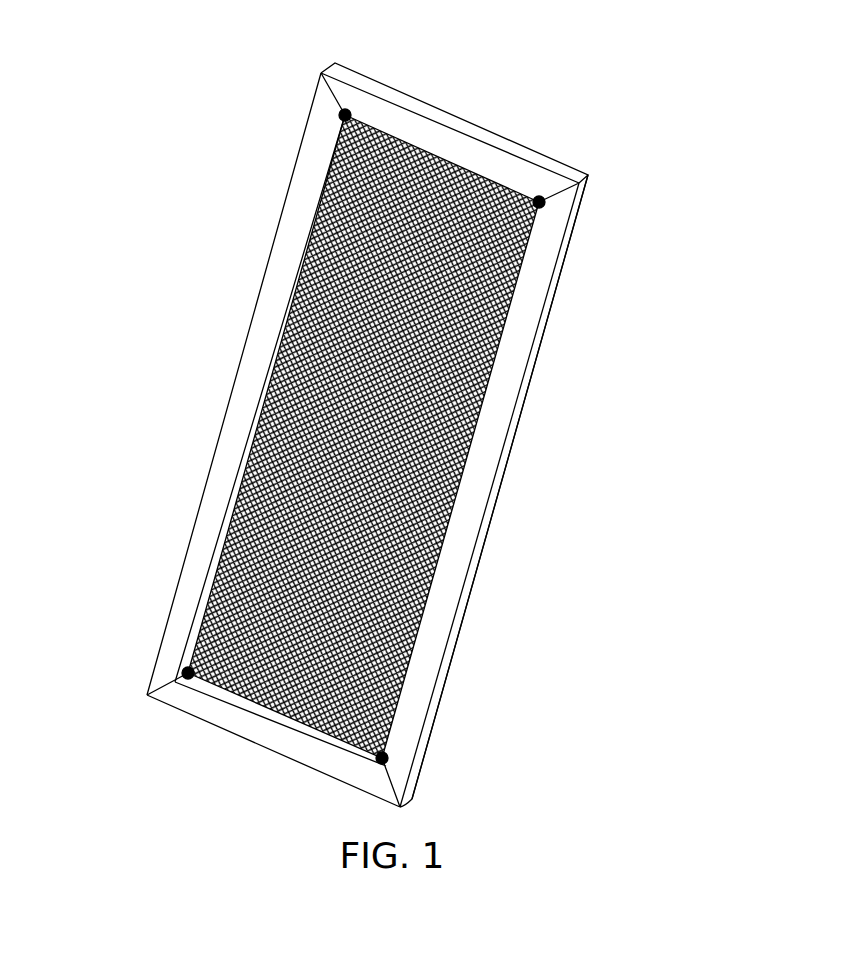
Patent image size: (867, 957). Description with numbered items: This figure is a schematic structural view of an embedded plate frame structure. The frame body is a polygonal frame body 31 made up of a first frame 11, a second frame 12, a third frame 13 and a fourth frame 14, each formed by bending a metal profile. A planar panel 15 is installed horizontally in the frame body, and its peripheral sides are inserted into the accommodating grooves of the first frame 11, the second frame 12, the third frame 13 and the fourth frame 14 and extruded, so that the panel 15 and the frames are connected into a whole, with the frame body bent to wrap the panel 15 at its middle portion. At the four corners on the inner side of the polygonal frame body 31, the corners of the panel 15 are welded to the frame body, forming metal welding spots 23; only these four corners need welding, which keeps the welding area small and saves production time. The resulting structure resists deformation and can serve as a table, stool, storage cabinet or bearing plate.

The first frame 11 is at (463, 150).
The second frame 12 is at (277, 740).
The third frame 13 is at (250, 380).
The fourth frame 14 is at (438, 635).
The panel 15 is at (400, 370).
The metal welding spot 23 is at (348, 113).
The polygonal frame body 31 is at (502, 490).